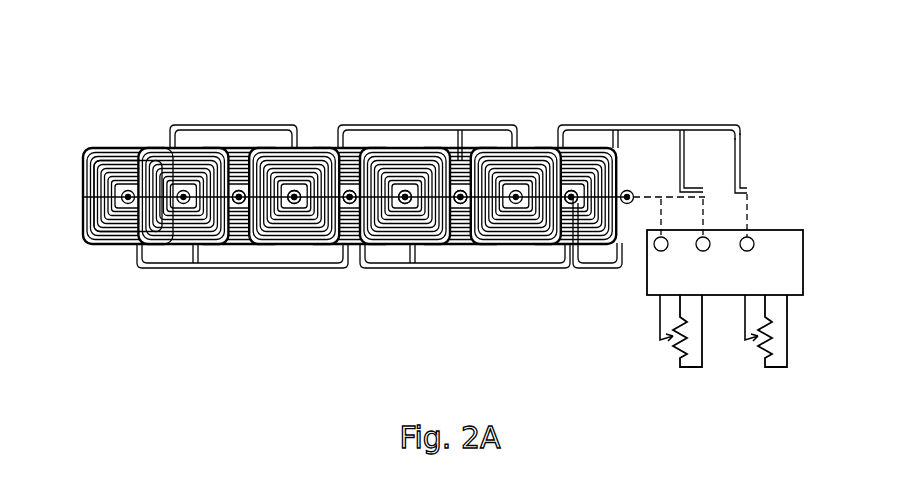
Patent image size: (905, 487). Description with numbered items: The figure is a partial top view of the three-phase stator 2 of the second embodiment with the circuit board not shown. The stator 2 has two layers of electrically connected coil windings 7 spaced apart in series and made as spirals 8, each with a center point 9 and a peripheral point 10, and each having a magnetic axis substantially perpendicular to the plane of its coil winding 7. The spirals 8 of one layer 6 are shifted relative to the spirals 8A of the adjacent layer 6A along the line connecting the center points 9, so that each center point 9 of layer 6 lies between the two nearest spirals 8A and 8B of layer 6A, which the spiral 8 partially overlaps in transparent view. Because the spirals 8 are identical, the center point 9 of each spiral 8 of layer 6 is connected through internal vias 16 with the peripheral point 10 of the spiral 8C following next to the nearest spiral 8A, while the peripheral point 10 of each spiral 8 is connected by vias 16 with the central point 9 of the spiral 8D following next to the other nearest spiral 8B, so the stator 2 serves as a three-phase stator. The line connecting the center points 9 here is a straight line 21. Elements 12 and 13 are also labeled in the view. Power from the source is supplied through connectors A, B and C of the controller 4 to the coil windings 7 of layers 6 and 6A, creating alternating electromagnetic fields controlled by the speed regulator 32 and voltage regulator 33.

The stator 2 is at (787, 146).
The controller 4 is at (773, 273).
The layer 6 is at (163, 162).
The adjacent layer 6A is at (83, 232).
The coil winding 7 is at (410, 163).
The spiral 8 is at (303, 160).
The spiral of adjacent layer 8A is at (243, 163).
The spiral of adjacent layer 8B is at (355, 157).
The spiral 8C is at (110, 163).
The spiral 8D is at (458, 233).
The center point 9 is at (296, 203).
The peripheral point 10 is at (283, 165).
The inner winding 12 is at (115, 230).
The connection line 13 is at (667, 194).
The straight line 21 is at (713, 161).
The via 16 is at (578, 185).
The speed regulator 32 is at (681, 345).
The voltage regulator 33 is at (766, 345).